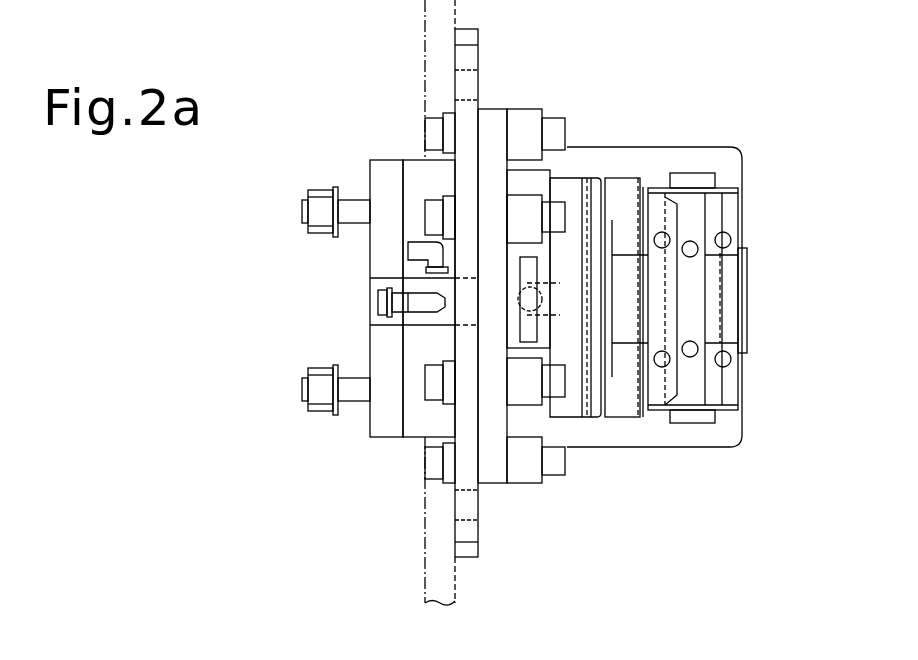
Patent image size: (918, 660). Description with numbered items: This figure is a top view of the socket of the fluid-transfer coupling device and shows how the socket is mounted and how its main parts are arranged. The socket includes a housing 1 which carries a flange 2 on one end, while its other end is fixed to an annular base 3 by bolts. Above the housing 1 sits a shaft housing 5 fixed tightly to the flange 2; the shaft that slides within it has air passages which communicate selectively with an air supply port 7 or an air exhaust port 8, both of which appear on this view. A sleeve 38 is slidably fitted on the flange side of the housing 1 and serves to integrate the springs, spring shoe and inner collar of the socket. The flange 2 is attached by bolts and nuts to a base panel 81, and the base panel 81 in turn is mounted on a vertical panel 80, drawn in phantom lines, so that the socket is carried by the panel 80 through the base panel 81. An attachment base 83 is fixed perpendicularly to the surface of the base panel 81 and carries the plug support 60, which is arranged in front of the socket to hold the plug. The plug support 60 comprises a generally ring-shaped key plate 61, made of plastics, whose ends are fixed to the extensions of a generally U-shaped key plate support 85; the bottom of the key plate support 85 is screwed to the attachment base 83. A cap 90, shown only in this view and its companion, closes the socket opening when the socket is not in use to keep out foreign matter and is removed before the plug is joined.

The housing 1 is at (422, 175).
The flange 2 is at (490, 123).
The annular base 3 is at (387, 180).
The shaft housing 5 is at (433, 317).
The air supply port 7 is at (418, 302).
The air exhaust port 8 is at (420, 252).
The sleeve 38 is at (572, 188).
The plug support 60 is at (754, 449).
The key plate 61 is at (692, 297).
The vertical panel 80 is at (440, 25).
The base panel 81 is at (477, 548).
The attachment base 83 is at (633, 160).
The key plate support 85 is at (727, 183).
The cap 90 is at (728, 277).